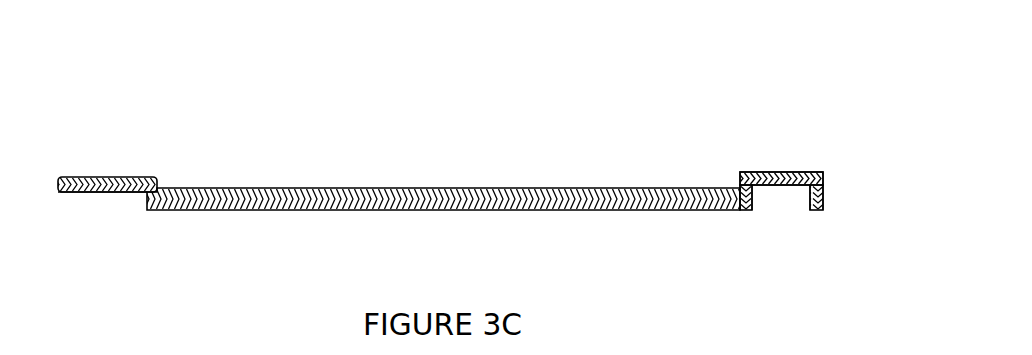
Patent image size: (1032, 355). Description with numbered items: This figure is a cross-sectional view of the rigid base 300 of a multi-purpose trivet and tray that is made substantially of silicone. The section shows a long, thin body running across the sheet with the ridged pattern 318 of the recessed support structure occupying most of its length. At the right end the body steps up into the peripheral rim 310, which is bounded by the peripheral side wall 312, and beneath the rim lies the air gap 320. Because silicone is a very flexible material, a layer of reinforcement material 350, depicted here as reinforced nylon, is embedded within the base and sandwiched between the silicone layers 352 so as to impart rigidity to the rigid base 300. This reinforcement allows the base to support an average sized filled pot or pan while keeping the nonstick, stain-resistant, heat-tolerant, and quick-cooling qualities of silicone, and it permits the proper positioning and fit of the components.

The rigid base 300 is at (153, 57).
The reinforcement material 350 is at (112, 179).
The silicone layers 352 is at (77, 194).
The ridged pattern 318 is at (317, 188).
The peripheral rim 310 is at (793, 161).
The peripheral side wall 312 is at (824, 193).
The air gap 320 is at (777, 198).